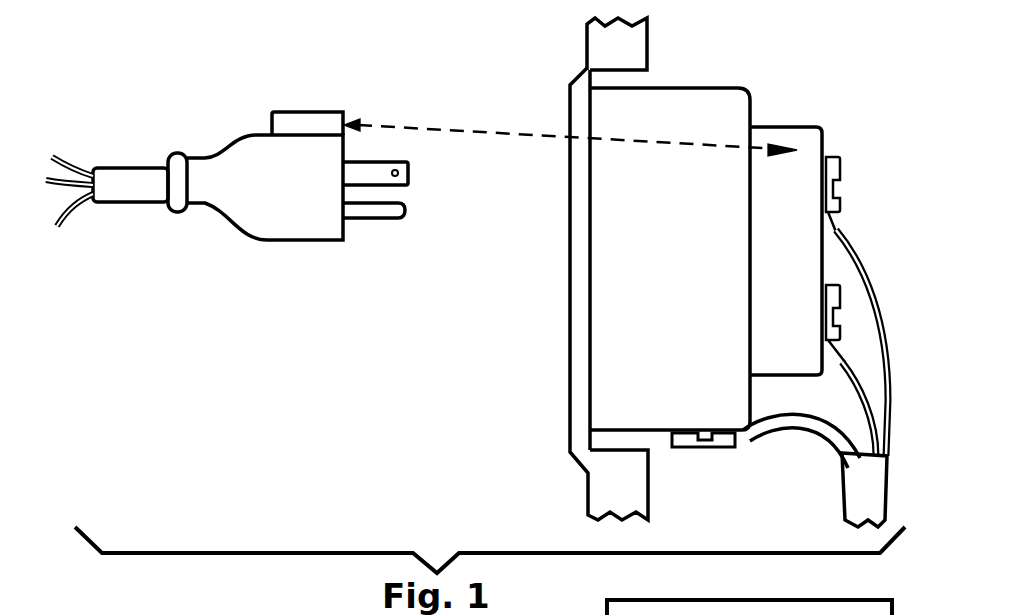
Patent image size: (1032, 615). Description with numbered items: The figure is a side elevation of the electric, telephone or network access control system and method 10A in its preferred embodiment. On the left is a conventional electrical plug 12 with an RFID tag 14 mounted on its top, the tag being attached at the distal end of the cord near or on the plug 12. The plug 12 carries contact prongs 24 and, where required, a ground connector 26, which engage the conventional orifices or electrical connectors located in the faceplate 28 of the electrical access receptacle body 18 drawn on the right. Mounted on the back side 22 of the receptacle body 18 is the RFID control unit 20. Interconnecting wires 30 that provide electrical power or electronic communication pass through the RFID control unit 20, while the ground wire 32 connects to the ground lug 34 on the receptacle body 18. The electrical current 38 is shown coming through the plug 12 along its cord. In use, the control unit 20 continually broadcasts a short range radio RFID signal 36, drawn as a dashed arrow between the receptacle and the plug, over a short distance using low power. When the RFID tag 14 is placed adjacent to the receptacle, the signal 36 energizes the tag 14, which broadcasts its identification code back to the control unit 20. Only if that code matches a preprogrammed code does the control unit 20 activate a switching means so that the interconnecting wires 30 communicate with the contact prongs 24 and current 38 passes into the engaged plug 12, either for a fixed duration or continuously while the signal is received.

The electric, telephone or network access control system and method 10A is at (220, 93).
The conventional electrical plug 12 is at (270, 213).
The RFID tag 14 is at (312, 112).
The electrical access receptacle body 18 is at (670, 259).
The RFID control unit 20 is at (797, 254).
The back side 22 is at (754, 113).
The contact prongs 24 is at (410, 176).
The ground connector 26 is at (400, 213).
The faceplate 28 is at (568, 102).
The interconnecting wires 30 is at (853, 358).
The ground wire 32 is at (775, 430).
The ground lug 34 is at (683, 448).
The short range radio RFID signal 36 is at (392, 122).
The electrical current 38 is at (82, 168).